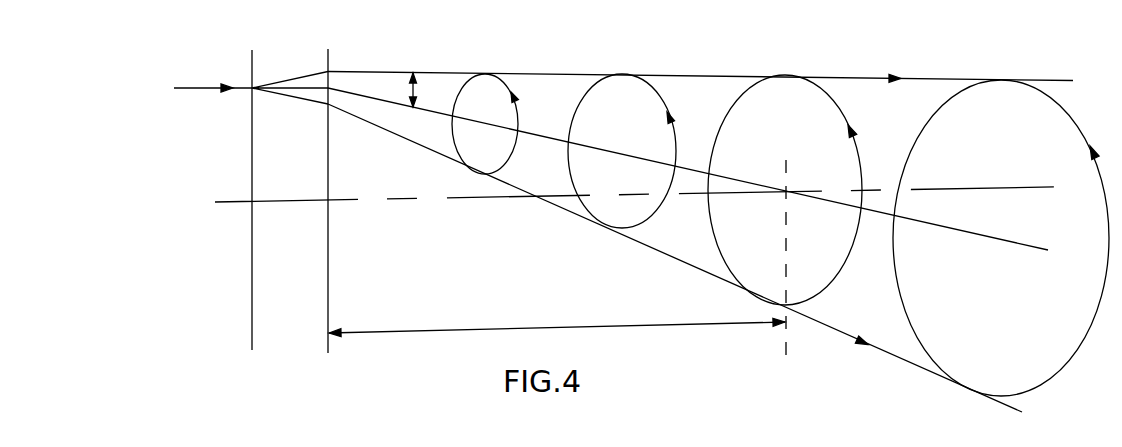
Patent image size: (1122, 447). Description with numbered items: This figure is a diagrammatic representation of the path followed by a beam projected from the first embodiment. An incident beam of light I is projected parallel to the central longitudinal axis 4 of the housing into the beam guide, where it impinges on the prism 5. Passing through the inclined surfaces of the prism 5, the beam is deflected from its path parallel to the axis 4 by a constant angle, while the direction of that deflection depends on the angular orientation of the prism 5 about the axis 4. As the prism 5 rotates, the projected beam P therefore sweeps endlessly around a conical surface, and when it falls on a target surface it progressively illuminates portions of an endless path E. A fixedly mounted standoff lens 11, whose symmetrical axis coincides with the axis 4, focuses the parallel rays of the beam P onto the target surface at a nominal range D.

The central longitudinal axis 4 is at (375, 201).
The prism 5 is at (252, 56).
The standoff lens 11 is at (328, 52).
The incident beam of light I is at (192, 88).
The beam projected from the rotating prism P is at (534, 72).
The endless path E is at (850, 121).
The nominal range D is at (428, 332).